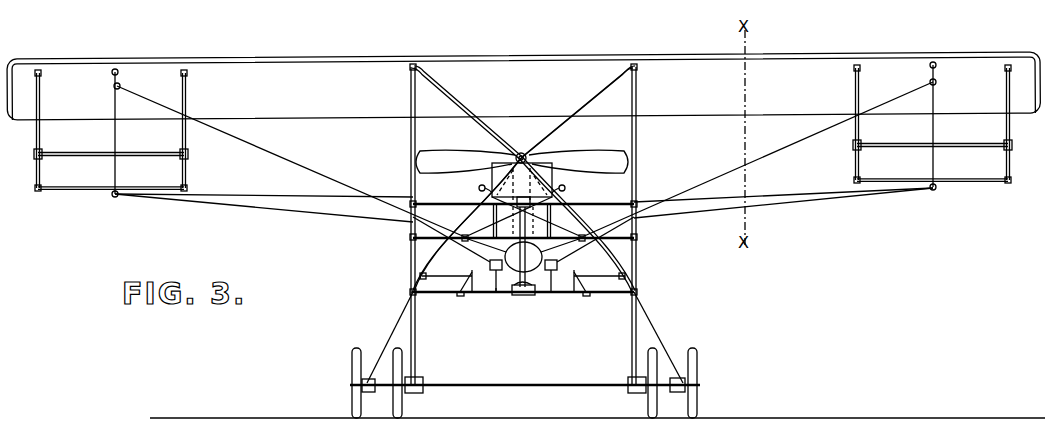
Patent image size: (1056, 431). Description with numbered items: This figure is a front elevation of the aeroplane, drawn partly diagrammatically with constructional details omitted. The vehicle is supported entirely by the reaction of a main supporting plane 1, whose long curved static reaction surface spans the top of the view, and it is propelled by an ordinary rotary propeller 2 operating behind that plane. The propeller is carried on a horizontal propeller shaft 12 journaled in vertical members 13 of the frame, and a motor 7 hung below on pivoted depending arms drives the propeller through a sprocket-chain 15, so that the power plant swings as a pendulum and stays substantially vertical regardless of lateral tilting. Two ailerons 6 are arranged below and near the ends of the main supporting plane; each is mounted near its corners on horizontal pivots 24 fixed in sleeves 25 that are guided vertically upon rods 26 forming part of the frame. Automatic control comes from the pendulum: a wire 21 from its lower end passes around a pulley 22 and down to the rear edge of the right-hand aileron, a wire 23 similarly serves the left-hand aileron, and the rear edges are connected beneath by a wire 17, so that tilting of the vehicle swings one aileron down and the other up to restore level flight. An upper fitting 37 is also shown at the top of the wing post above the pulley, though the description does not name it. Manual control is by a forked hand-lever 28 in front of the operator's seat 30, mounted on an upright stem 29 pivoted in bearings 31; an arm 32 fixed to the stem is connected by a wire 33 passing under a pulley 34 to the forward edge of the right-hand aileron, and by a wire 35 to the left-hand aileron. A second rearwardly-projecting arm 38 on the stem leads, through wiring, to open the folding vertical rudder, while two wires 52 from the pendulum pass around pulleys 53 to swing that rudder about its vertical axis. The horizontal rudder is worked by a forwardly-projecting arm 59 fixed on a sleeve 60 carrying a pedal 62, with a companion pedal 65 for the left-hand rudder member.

The main supporting plane 1 is at (523, 86).
The rotary propeller 2 is at (522, 161).
The aileron 6 is at (85, 153).
The motor 7 is at (538, 258).
The propeller shaft 12 is at (521, 153).
The vertical members 13 is at (473, 119).
The sprocket-chain 15 is at (508, 253).
The wire 17 is at (284, 196).
The wire 21 is at (321, 178).
The pulley 22 is at (121, 86).
The wire 23 is at (795, 143).
The horizontal pivots 24 is at (184, 149).
The sleeves 25 is at (35, 154).
The rods 26 is at (40, 183).
The forked hand-lever 28 is at (479, 188).
The upright stem 29 is at (517, 294).
The operator's seat 30 is at (554, 180).
The bearings 31 is at (514, 186).
The arm 32 is at (500, 214).
The wire 33 is at (345, 216).
The pulley 34 is at (115, 197).
The wire 35 is at (789, 204).
The upper eye 37 is at (115, 69).
The second rearwardly-projecting arm 38 is at (535, 288).
The wires 52 is at (462, 278).
The pulleys 53 is at (622, 274).
The forwardly-projecting arm 59 is at (493, 289).
The sleeve 60 is at (468, 297).
The pedal 62 is at (490, 266).
The pedal 65 is at (558, 267).